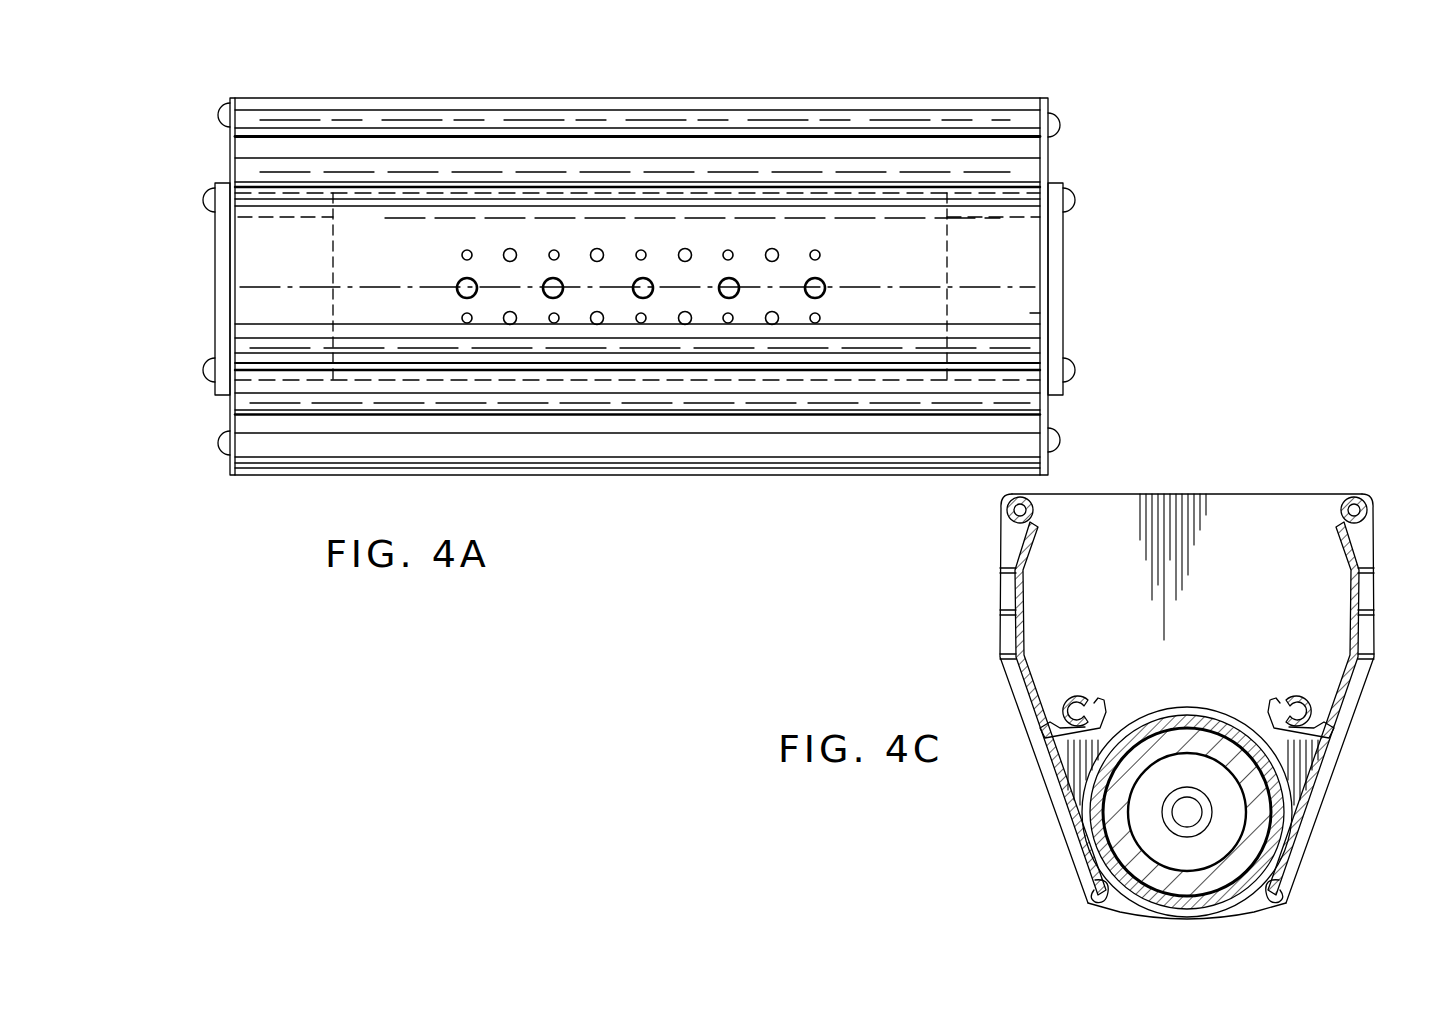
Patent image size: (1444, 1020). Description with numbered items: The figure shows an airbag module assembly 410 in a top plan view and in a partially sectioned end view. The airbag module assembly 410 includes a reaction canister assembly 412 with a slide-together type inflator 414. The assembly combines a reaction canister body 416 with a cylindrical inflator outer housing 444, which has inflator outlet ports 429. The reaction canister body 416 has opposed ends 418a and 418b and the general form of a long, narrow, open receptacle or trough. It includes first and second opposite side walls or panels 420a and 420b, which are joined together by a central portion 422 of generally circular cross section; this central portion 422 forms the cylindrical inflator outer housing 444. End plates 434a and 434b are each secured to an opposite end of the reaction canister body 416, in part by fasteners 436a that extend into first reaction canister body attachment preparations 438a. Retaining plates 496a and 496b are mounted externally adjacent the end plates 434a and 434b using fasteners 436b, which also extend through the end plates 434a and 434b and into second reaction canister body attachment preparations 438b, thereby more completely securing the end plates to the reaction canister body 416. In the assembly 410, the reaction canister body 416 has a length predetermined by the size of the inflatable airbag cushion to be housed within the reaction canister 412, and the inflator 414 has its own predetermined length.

In FIG. 4A, the airbag module assembly 410 is at (1192, 266).
In FIG. 4C, the airbag module assembly 410 is at (1242, 480).
In FIG. 4A, the reaction canister assembly 412 is at (266, 245).
In FIG. 4C, the reaction canister assembly 412 is at (1338, 636).
In FIG. 4A, the inflator 414 is at (928, 265).
In FIG. 4C, the inflator 414 is at (1298, 788).
In FIG. 4A, the reaction canister body 416 is at (1028, 313).
In FIG. 4C, the reaction canister body 416 is at (1028, 613).
In FIG. 4A, the end 418a is at (232, 308).
In FIG. 4A, the end 418b is at (1033, 243).
In FIG. 4A, the first side wall 420a is at (722, 470).
In FIG. 4C, the first side wall 420a is at (1035, 505).
In FIG. 4A, the second side wall 420b is at (817, 125).
In FIG. 4C, the second side wall 420b is at (1322, 500).
In FIG. 4A, the central portion 422 is at (312, 310).
In FIG. 4C, the central portion 422 is at (1082, 810).
In FIG. 4A, the inflator outlet ports 429 is at (460, 289).
In FIG. 4A, the end plate 434a is at (230, 413).
In FIG. 4C, the end plate 434a is at (1287, 581).
In FIG. 4A, the end plate 434b is at (1050, 413).
In FIG. 4A, the fasteners 436a is at (228, 113).
In FIG. 4A, the fasteners 436b is at (215, 198).
In FIG. 4C, the first reaction canister body attachment preparations 438a is at (1012, 505).
In FIG. 4C, the second reaction canister body attachment preparations 438b is at (1130, 715).
In FIG. 4A, the cylindrical inflator outer housing 444 is at (914, 271).
In FIG. 4C, the cylindrical inflator outer housing 444 is at (1213, 715).
In FIG. 4A, the retaining plate 496a is at (223, 281).
In FIG. 4A, the retaining plate 496b is at (1058, 293).